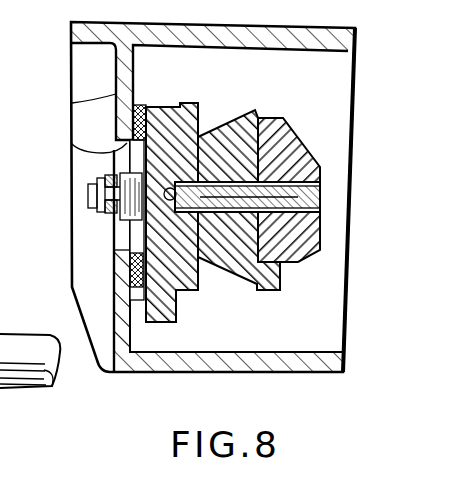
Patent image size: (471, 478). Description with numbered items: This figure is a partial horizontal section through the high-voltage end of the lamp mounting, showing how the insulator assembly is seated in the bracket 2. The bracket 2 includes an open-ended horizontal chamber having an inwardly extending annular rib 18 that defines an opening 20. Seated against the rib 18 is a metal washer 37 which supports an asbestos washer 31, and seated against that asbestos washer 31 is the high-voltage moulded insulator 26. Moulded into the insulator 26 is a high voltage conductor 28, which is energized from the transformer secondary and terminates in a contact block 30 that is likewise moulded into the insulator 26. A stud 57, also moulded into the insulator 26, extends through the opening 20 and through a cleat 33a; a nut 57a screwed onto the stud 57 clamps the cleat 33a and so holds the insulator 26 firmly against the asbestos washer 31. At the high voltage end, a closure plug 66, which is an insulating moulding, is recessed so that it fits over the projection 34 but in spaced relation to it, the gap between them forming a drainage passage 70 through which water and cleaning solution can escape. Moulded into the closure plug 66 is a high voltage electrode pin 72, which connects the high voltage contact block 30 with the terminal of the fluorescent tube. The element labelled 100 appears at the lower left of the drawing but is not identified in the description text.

The bracket 2 is at (306, 381).
The annular rib 18 is at (72, 103).
The opening 20 is at (76, 148).
The high-voltage moulded insulator 26 is at (165, 108).
The high voltage conductor 28 is at (171, 190).
The contact block 30 is at (198, 200).
The asbestos washer 31 is at (143, 295).
The cleat 33a is at (112, 178).
The projection 34 is at (226, 252).
The metal washer 37 is at (115, 248).
The stud 57 is at (100, 195).
The nut 57a is at (97, 180).
The closure plug 66 is at (300, 165).
The drainage passage 70 is at (204, 287).
The high voltage electrode pin 72 is at (320, 207).
The rod 100 is at (30, 400).